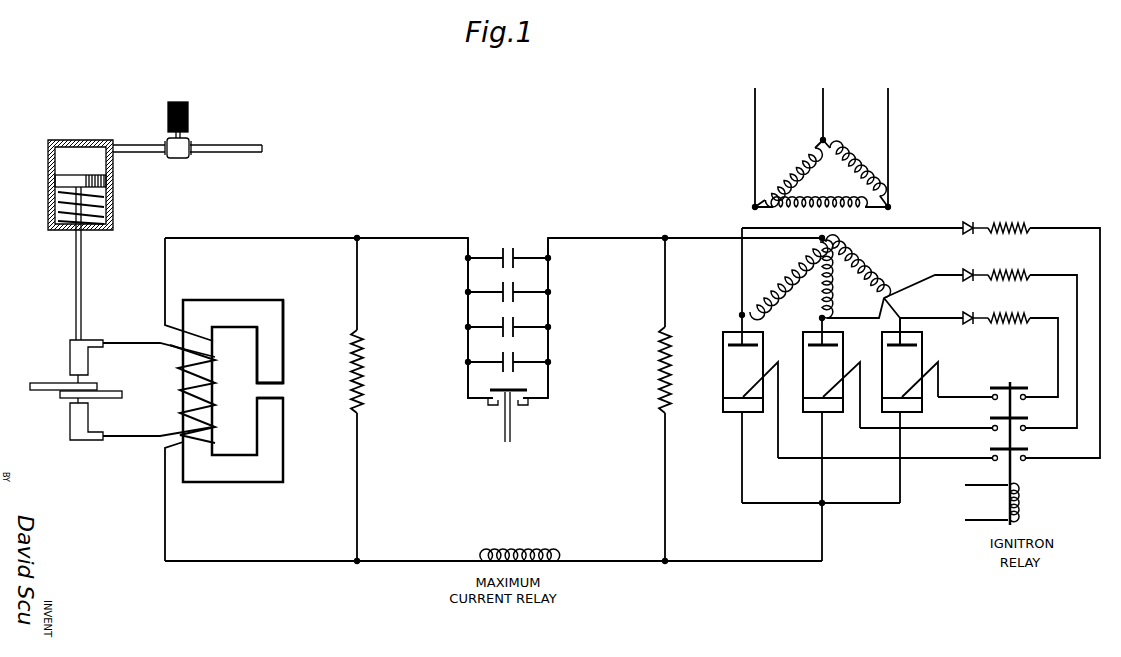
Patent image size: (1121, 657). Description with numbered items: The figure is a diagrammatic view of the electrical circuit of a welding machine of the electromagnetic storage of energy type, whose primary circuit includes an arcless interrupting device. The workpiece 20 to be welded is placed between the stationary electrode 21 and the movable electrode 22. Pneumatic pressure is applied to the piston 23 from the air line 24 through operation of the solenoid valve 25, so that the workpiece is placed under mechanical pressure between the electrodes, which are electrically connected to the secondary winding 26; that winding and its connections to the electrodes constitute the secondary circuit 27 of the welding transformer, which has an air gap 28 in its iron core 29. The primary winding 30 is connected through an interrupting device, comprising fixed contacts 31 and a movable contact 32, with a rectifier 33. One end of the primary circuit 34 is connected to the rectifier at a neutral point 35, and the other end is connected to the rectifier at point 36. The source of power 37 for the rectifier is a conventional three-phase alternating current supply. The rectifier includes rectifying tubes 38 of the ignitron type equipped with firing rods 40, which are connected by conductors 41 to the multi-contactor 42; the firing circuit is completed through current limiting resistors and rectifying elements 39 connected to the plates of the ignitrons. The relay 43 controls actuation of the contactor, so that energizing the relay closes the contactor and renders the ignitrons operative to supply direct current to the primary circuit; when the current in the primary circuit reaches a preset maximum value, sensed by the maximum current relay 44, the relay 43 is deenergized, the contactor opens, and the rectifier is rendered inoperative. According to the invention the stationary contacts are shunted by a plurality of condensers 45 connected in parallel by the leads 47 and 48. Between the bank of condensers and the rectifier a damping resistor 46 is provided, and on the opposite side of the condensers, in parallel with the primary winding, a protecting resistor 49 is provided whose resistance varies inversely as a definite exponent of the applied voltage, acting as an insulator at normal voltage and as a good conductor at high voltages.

The workpiece 20 is at (48, 383).
The stationary electrode 21 is at (82, 441).
The movable electrode 22 is at (72, 343).
The piston 23 is at (60, 178).
The air line 24 is at (230, 148).
The solenoid valve 25 is at (178, 158).
The secondary winding 26 is at (178, 388).
The secondary circuit 27 is at (128, 334).
The air gap 28 is at (275, 390).
The iron core 29 is at (278, 365).
The primary winding 30 is at (195, 338).
The fixed contacts 31 is at (490, 405).
The movable contact 32 is at (521, 403).
The rectifier 33 is at (893, 298).
The primary circuit 34 is at (275, 570).
The neutral point 35 is at (825, 238).
The rectifier connection point 36 is at (824, 505).
The source of power 37 is at (803, 122).
The rectifying tubes 38 is at (723, 382).
The current limiting resistors and rectifying elements 39 is at (995, 316).
The firing rods 40 is at (765, 372).
The conductors 41 is at (957, 397).
The multi-contactor 42 is at (1010, 388).
The relay 43 is at (1018, 498).
The maximum current relay 44 is at (509, 556).
The condensers 45 is at (500, 252).
The damping resistor 46 is at (656, 397).
The lead 47 is at (466, 314).
The lead 48 is at (550, 277).
The protecting resistor 49 is at (365, 399).